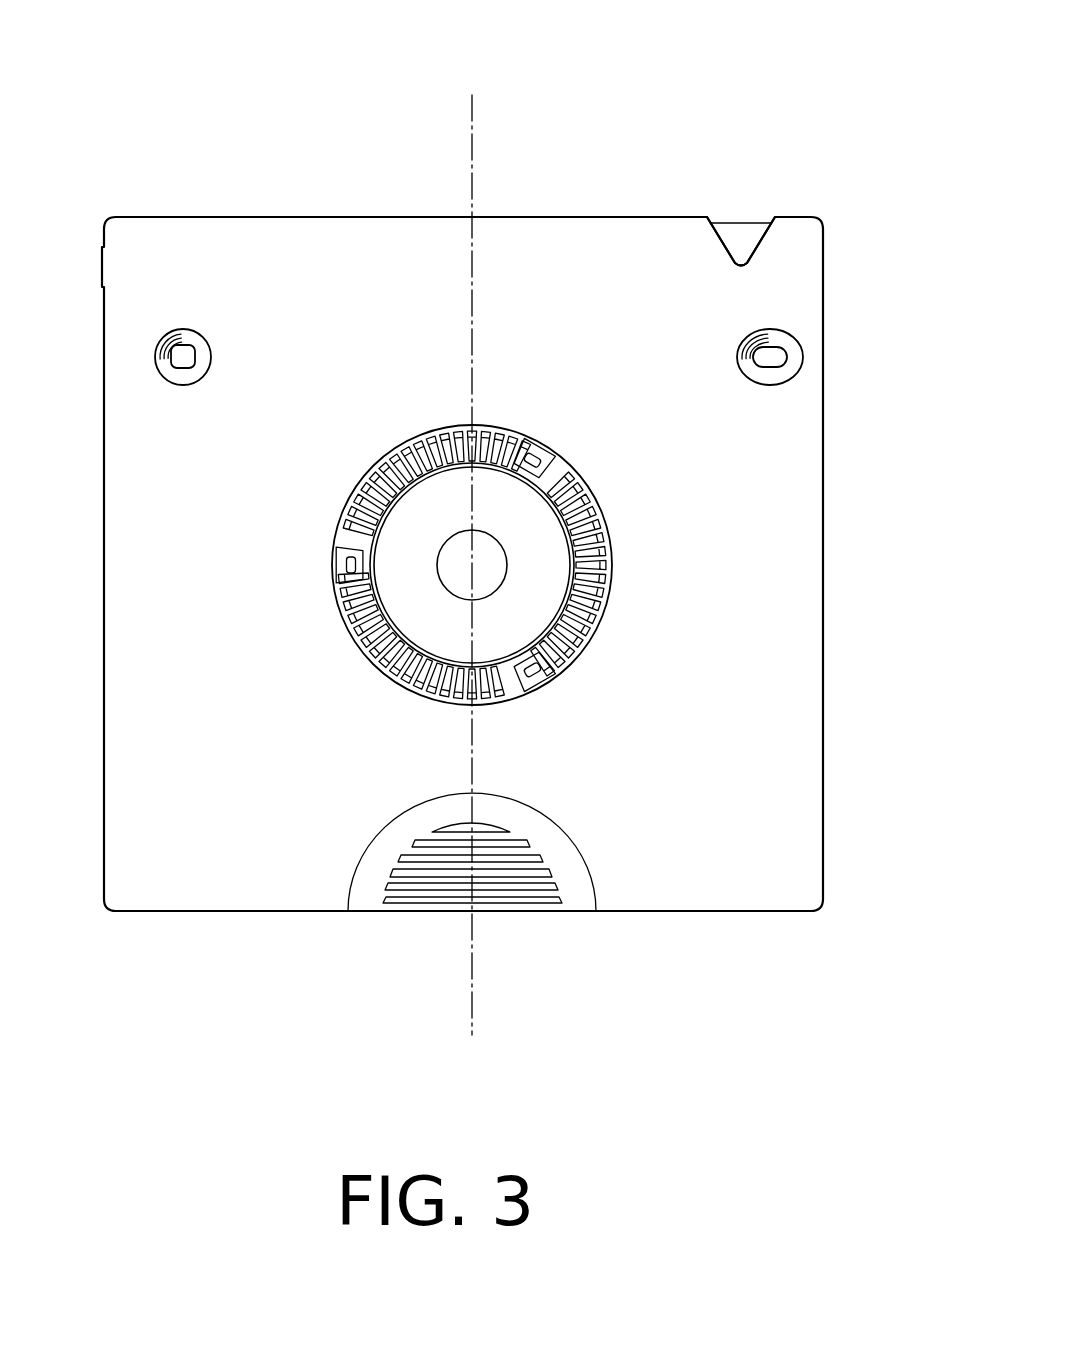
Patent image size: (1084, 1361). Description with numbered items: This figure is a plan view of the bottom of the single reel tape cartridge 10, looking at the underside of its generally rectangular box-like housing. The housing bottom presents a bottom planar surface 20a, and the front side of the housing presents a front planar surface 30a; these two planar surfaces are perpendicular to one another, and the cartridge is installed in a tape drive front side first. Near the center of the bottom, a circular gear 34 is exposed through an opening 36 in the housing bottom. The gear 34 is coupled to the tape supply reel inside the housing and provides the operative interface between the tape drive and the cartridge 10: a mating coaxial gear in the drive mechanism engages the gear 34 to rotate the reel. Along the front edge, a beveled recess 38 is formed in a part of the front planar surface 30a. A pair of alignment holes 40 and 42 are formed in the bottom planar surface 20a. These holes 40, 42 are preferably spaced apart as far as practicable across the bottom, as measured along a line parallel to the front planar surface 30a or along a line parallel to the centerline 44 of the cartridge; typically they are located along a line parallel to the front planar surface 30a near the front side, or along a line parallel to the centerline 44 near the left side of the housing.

The single reel tape cartridge 10 is at (675, 103).
The bottom planar surface 20a is at (247, 611).
The front planar surface 30a is at (285, 169).
The circular gear 34 is at (606, 519).
The opening 36 is at (552, 558).
The beveled recess 38 is at (740, 242).
The alignment hole 40 is at (743, 357).
The alignment hole 42 is at (205, 357).
The centerline 44 is at (472, 143).